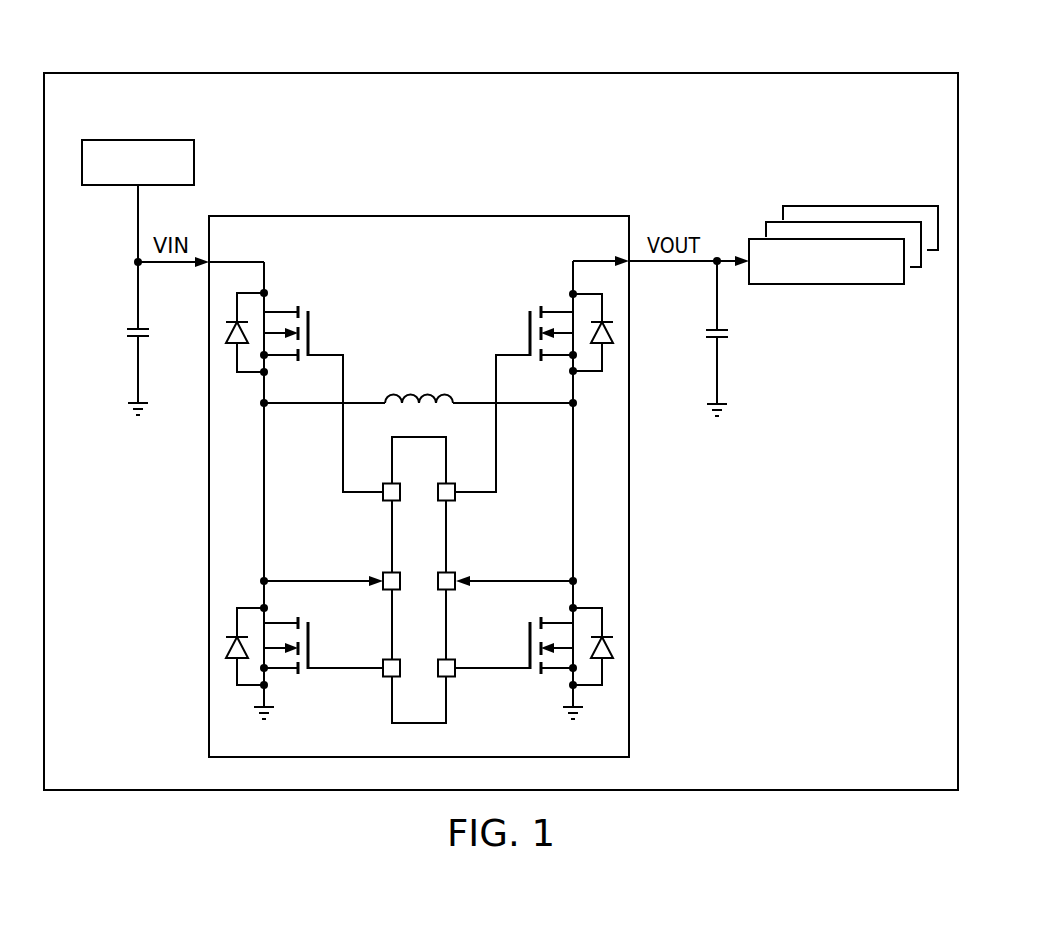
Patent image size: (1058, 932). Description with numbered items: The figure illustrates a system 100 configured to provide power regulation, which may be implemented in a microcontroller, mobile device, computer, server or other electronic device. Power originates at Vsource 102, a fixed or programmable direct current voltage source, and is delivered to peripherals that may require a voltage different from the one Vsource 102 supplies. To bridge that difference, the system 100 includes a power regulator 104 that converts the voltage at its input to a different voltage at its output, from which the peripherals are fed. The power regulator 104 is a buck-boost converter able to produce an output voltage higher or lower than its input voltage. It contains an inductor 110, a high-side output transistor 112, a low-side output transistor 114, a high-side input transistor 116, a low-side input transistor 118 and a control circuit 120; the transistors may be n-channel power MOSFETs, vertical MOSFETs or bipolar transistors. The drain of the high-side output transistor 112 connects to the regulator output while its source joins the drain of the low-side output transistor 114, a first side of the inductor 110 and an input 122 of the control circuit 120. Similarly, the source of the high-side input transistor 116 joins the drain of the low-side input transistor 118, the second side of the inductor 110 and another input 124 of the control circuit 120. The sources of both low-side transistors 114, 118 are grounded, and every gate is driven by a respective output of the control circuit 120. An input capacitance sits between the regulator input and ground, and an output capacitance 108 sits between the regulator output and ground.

The system 100 is at (322, 70).
The Vsource 102 is at (125, 140).
The power regulator 104 is at (394, 212).
The output capacitance COUT 108 is at (730, 334).
The inductor 110 is at (408, 386).
The high-side output transistor 112 is at (529, 320).
The low-side output transistor 114 is at (529, 633).
The high-side input transistor 116 is at (310, 320).
The low-side input transistor 118 is at (310, 633).
The control circuit 120 is at (391, 697).
The input of control circuit 122 is at (456, 572).
The another input of control circuit 124 is at (384, 572).